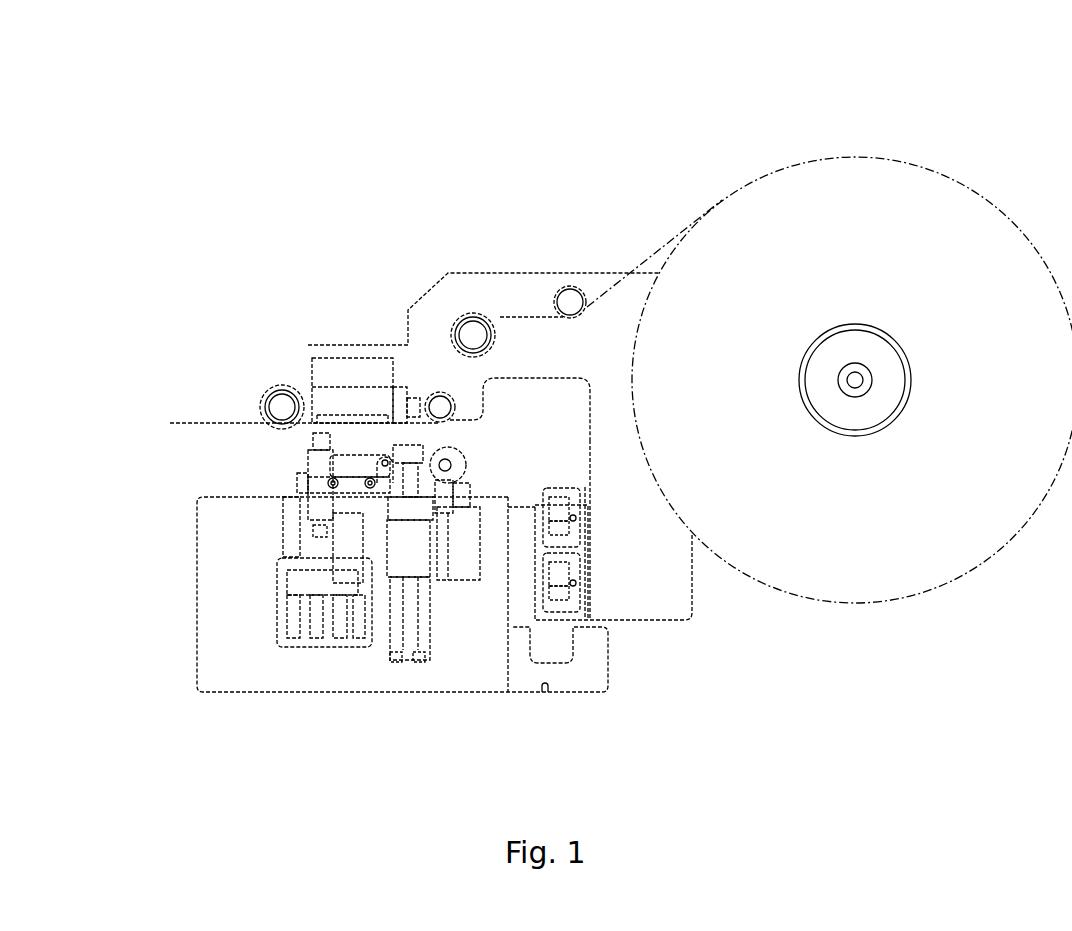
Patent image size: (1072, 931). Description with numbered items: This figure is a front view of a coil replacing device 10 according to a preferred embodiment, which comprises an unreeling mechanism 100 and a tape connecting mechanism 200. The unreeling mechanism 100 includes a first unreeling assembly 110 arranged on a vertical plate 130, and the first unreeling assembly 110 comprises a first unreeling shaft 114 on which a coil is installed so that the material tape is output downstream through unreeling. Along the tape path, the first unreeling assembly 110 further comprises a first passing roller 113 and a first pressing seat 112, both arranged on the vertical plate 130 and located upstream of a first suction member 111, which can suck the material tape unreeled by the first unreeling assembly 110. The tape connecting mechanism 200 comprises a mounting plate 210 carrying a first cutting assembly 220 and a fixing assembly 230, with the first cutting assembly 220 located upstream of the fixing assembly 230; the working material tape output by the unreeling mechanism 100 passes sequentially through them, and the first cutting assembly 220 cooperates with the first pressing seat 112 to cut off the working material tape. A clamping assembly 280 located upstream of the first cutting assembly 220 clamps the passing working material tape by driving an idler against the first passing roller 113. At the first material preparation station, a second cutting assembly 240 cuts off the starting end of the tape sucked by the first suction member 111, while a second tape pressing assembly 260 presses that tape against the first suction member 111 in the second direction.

The coil replacing device 10 is at (197, 66).
The unreeling mechanism 100 is at (278, 325).
The first unreeling assembly 110 is at (540, 185).
The first suction member 111 is at (357, 398).
The first pressing seat 112 is at (403, 397).
The first passing roller 113 is at (437, 403).
The first unreeling shaft 114 is at (683, 262).
The vertical plate 130 is at (677, 600).
The tape connecting mechanism 200 is at (642, 671).
The mounting plate 210 is at (232, 598).
The first cutting assembly 220 is at (392, 522).
The fixing assembly 230 is at (320, 462).
The second cutting assembly 240 is at (305, 500).
The second tape pressing assembly 260 is at (305, 477).
The clamping assembly 280 is at (438, 512).